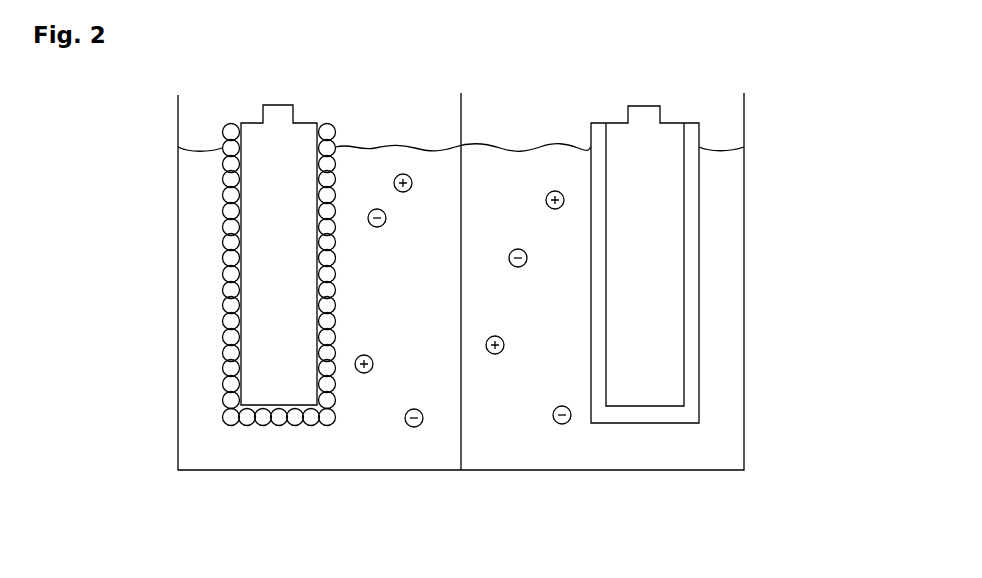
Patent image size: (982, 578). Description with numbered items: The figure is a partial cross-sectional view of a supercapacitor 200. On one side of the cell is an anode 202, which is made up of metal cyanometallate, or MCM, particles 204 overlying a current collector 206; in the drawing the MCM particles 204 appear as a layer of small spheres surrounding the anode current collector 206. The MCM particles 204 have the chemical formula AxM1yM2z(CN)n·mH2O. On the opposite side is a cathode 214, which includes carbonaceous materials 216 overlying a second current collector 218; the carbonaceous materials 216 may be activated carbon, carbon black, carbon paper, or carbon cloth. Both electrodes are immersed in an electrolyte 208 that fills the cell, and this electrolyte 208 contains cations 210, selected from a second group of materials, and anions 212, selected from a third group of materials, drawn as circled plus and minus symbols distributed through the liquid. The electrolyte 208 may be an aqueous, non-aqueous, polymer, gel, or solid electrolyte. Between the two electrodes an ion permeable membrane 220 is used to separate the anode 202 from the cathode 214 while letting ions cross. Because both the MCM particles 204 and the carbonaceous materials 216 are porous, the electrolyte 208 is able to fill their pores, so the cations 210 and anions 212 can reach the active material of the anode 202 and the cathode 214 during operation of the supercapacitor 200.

The supercapacitor 200 is at (623, 65).
The anode 202 is at (191, 328).
The MCM particles 204 is at (191, 275).
The current collector 206 is at (259, 267).
The electrolyte 208 is at (375, 327).
The cations 210 is at (373, 365).
The anions 212 is at (509, 258).
The cathode 214 is at (737, 328).
The carbonaceous materials 216 is at (744, 264).
The current collector 218 is at (624, 267).
The ion permeable membrane 220 is at (461, 445).